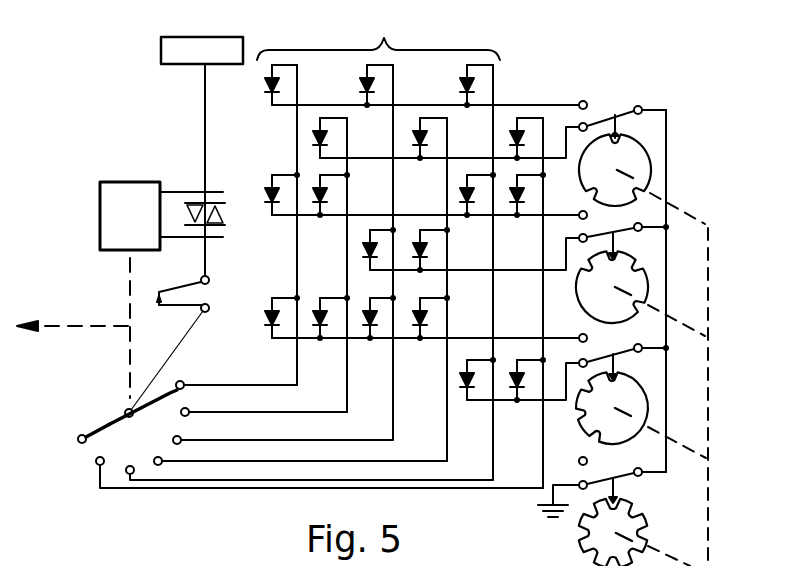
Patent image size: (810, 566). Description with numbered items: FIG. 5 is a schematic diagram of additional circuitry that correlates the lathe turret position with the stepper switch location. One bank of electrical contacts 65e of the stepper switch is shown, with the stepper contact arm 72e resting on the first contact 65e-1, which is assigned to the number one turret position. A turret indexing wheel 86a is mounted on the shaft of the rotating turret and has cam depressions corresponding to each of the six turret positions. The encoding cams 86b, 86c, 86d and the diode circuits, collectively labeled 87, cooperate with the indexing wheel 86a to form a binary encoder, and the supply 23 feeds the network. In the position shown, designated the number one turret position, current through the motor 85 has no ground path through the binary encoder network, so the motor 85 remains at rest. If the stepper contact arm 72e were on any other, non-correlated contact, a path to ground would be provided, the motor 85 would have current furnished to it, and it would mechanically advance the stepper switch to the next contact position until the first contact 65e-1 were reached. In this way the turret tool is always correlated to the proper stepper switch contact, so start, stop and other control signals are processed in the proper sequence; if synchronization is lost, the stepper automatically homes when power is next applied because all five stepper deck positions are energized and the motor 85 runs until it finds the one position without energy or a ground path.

The 24 VDC power supply 23 is at (212, 37).
The diode circuits 87 is at (385, 40).
The motor 85 is at (141, 225).
The turret indexing wheel 86a is at (650, 540).
The encoding cam 86b is at (650, 409).
The encoding cam 86c is at (650, 290).
The encoding cam 86d is at (653, 170).
The bank of electrical contacts 65e is at (110, 419).
The first electrical contact 65e-1 is at (183, 381).
The stepper contact arm 72e is at (112, 432).